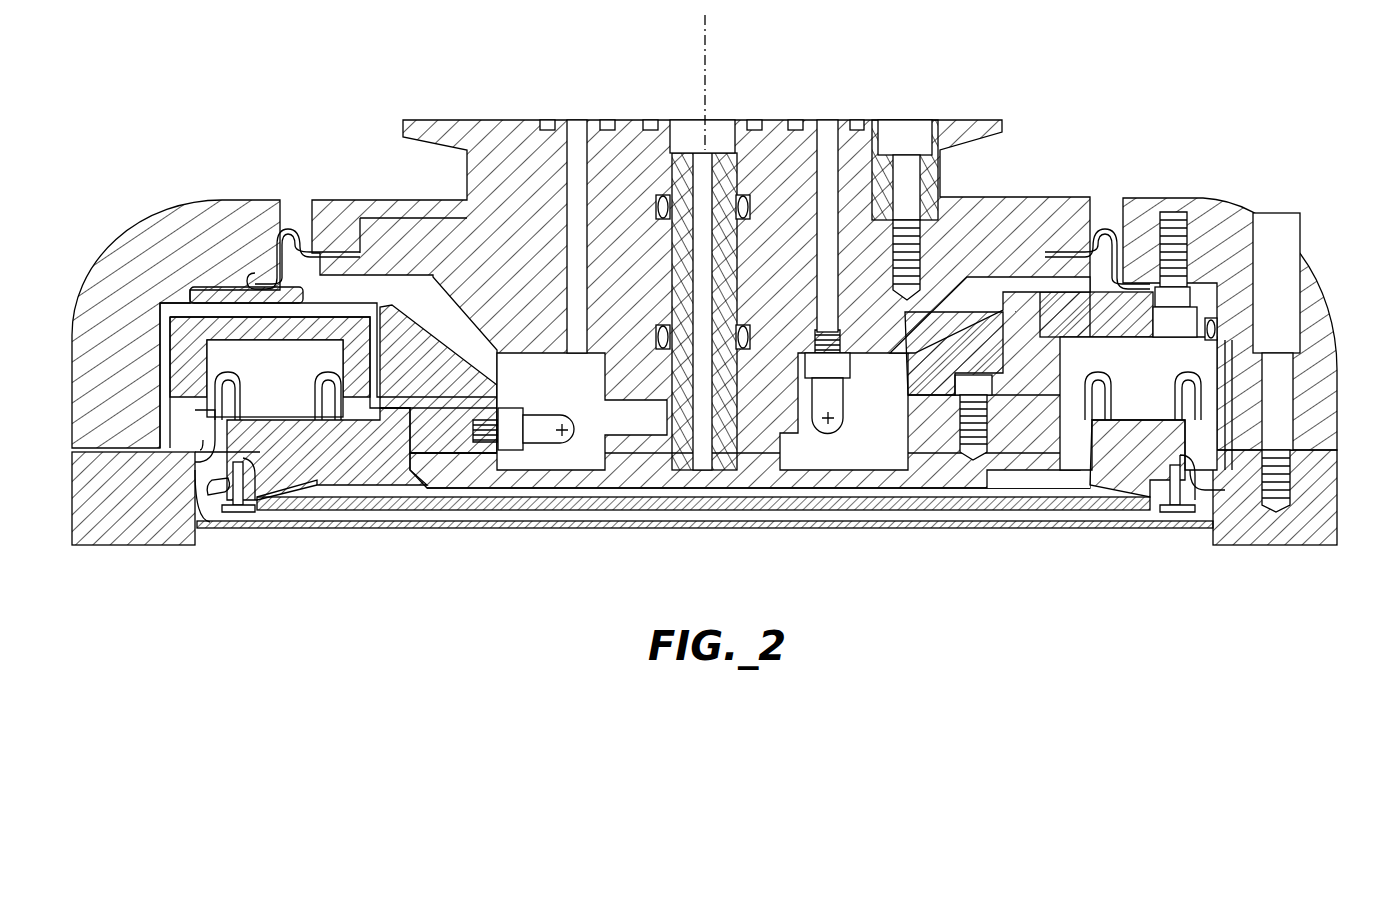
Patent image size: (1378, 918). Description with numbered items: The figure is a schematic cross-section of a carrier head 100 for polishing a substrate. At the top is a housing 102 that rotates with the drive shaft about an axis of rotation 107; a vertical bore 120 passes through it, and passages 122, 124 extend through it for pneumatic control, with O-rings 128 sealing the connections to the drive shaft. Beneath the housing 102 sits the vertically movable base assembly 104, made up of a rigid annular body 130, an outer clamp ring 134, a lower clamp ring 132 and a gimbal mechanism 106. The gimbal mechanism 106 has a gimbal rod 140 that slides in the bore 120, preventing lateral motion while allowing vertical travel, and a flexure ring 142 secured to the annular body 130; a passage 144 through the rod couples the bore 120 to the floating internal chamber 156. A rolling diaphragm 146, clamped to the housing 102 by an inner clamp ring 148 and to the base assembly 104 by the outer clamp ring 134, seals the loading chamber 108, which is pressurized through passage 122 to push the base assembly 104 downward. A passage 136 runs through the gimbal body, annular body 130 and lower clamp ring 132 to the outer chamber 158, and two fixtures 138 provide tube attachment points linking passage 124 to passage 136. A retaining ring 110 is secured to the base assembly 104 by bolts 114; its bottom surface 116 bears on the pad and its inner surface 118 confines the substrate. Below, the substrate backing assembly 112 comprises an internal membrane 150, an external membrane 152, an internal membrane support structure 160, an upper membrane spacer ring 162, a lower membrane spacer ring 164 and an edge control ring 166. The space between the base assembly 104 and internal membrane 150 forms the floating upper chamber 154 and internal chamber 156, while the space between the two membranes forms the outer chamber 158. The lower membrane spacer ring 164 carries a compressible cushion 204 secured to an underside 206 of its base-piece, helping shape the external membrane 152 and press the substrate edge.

The carrier head 100 is at (1126, 97).
The housing 102 is at (995, 195).
The base assembly 104 is at (1140, 198).
The gimbal mechanism 106 is at (733, 492).
The axis of rotation 107 is at (708, 40).
The loading chamber 108 is at (572, 392).
The retaining ring 110 is at (1340, 528).
The substrate backing assembly 112 is at (1170, 530).
The bolts 114 is at (1273, 250).
The bottom surface 116 is at (1263, 547).
The inner surface 118 is at (1210, 537).
The vertical bore 120 is at (722, 122).
The passage 122 is at (578, 135).
The passage 124 is at (827, 133).
The O-rings 128 is at (652, 120).
The annular body 130 is at (1075, 290).
The lower clamp ring 132 is at (1300, 350).
The outer clamp ring 134 is at (180, 207).
The passage 136 is at (283, 313).
The fixtures 138 is at (580, 433).
The gimbal rod 140 is at (723, 403).
The flexure ring 142 is at (842, 482).
The passage 144 is at (702, 160).
The rolling diaphragm 146 is at (293, 228).
The inner clamp ring 148 is at (353, 197).
The internal membrane 150 is at (318, 512).
The external membrane 152 is at (505, 515).
The floating upper chamber 154 is at (1162, 392).
The floating internal chamber 156 is at (1050, 494).
The outer chamber 158 is at (952, 517).
The internal membrane support structure 160 is at (327, 488).
The upper membrane spacer ring 162 is at (227, 443).
The lower membrane spacer ring 164 is at (260, 530).
The edge control ring 166 is at (203, 493).
The compressible cushion 204 is at (240, 517).
The underside 206 is at (220, 527).